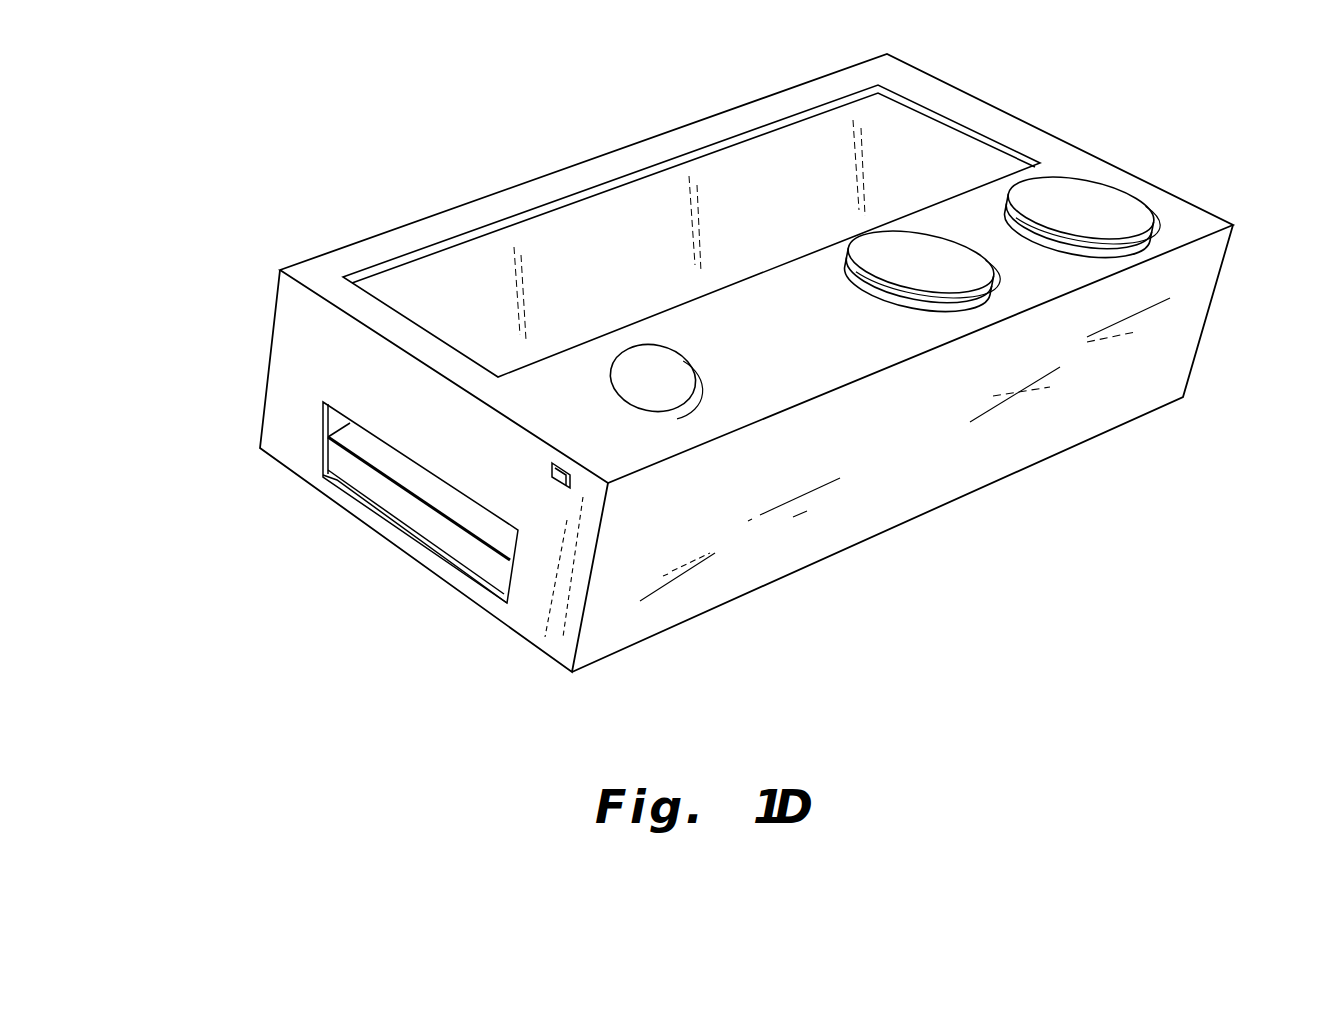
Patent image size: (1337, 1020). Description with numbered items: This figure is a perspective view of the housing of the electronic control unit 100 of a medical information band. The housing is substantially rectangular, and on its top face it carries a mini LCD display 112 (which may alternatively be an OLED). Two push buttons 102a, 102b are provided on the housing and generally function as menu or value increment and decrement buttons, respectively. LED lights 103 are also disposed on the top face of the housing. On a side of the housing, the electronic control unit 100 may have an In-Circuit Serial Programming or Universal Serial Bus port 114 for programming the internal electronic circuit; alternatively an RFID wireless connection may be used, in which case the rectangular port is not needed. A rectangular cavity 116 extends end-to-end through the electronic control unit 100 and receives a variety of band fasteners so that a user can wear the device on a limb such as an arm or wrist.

The electronic control unit 100 is at (1200, 223).
The mini LCD display 112 is at (613, 250).
The push button 102a is at (1077, 205).
The push button 102b is at (953, 273).
The LED lights 103 is at (697, 370).
The ICSP or USB port 114 is at (558, 492).
The rectangular cavity 116 is at (343, 423).